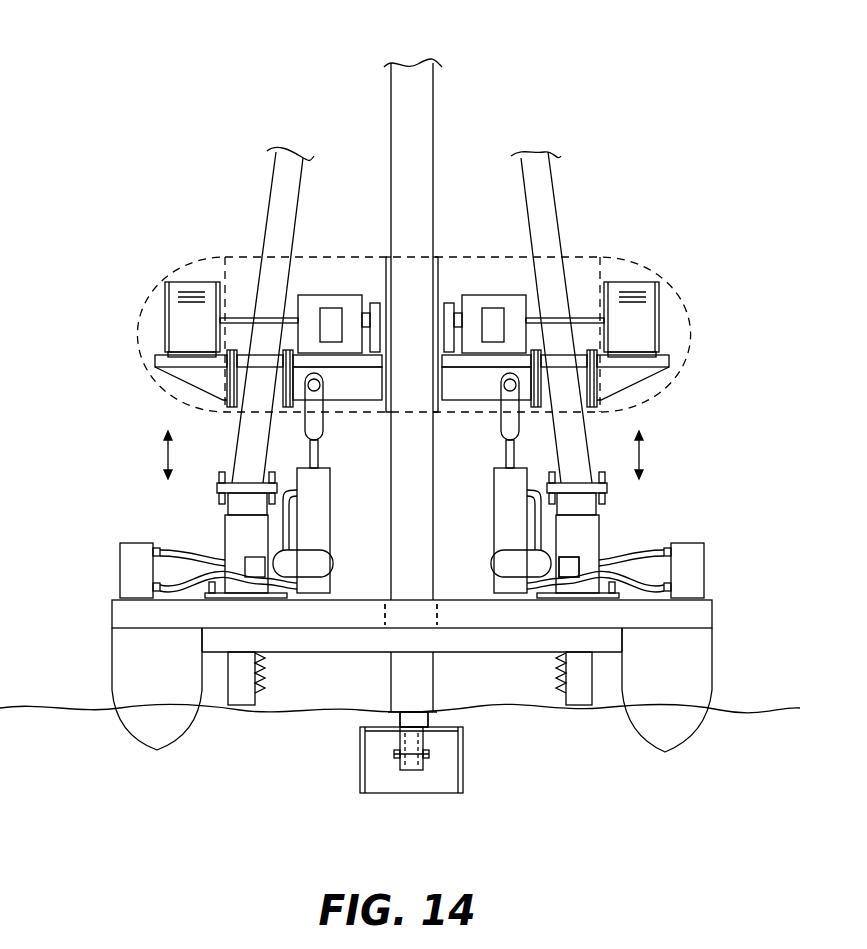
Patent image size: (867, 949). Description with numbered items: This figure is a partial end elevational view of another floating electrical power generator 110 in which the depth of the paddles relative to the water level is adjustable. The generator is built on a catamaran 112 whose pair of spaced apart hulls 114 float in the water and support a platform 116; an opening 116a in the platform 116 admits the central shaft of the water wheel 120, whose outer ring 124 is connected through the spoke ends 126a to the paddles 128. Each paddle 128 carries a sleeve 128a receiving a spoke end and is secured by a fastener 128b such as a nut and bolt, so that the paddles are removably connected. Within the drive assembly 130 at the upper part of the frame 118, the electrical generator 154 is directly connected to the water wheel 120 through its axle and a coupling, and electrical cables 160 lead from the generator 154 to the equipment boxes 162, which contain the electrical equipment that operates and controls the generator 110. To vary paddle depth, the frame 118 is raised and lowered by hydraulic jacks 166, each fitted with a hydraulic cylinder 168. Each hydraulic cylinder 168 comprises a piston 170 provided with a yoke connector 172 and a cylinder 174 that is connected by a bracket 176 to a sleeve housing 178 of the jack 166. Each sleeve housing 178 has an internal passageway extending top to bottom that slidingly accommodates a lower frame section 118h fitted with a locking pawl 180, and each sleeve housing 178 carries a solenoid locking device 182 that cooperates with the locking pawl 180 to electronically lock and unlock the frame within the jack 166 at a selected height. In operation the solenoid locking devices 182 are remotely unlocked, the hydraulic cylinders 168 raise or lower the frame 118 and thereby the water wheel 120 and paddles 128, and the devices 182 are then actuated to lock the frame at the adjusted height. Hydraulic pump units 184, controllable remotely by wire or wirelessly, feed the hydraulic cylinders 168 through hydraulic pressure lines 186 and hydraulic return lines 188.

The floating electrical power generator 110 is at (124, 80).
The catamaran 112 is at (106, 668).
The hull 114 is at (142, 728).
The platform 116 is at (106, 618).
The platform opening 116a is at (383, 606).
The frame 118 is at (563, 196).
The lower frame section 118h is at (237, 702).
The water wheel 120 is at (387, 105).
The outer ring 124 is at (425, 153).
The spoke end 126a is at (425, 718).
The paddle 128 is at (360, 757).
The sleeve 128a is at (422, 738).
The fastener 128b is at (429, 757).
The drive assembly 130 is at (143, 310).
The electrical generator 154 is at (340, 295).
The electrical cable 160 is at (242, 286).
The equipment box 162 is at (166, 281).
The hydraulic jack 166 is at (220, 519).
The hydraulic cylinder 168 is at (334, 522).
The piston 170 is at (318, 455).
The yoke connector 172 is at (323, 435).
The cylinder 174 is at (320, 500).
The bracket 176 is at (331, 562).
The sleeve housing 178 is at (597, 567).
The locking pawl 180 is at (266, 675).
The solenoid locking device 182 is at (247, 565).
The hydraulic pump unit 184 is at (128, 557).
The hydraulic pressure line 186 is at (172, 585).
The hydraulic return line 188 is at (162, 550).